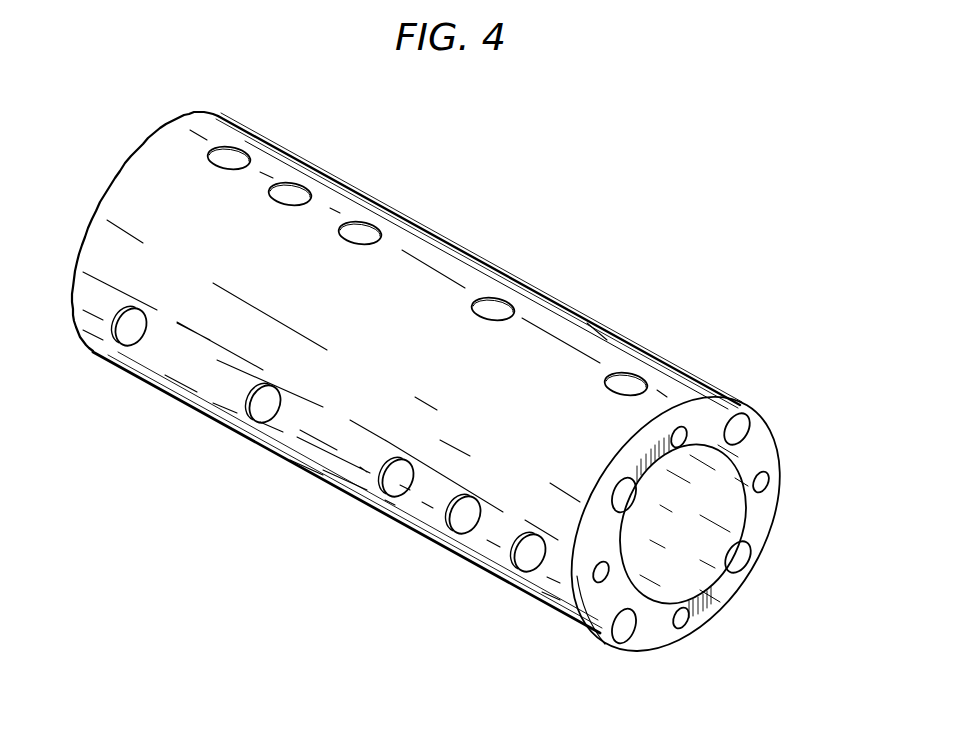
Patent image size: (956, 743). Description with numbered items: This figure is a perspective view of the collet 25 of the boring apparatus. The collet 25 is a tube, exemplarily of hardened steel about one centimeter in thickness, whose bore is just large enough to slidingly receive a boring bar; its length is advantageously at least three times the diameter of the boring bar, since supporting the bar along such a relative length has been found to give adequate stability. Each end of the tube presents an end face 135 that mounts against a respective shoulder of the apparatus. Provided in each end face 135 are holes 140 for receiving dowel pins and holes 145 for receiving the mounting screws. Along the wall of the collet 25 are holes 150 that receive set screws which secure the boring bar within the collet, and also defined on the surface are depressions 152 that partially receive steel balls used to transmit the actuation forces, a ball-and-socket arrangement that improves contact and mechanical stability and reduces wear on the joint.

The collet 25 is at (575, 305).
The end face 135 is at (713, 597).
The hole for dowel pin 140 is at (773, 482).
The hole for screw 145 is at (748, 423).
The hole for set screw 150 is at (232, 160).
The depression 152 is at (297, 196).